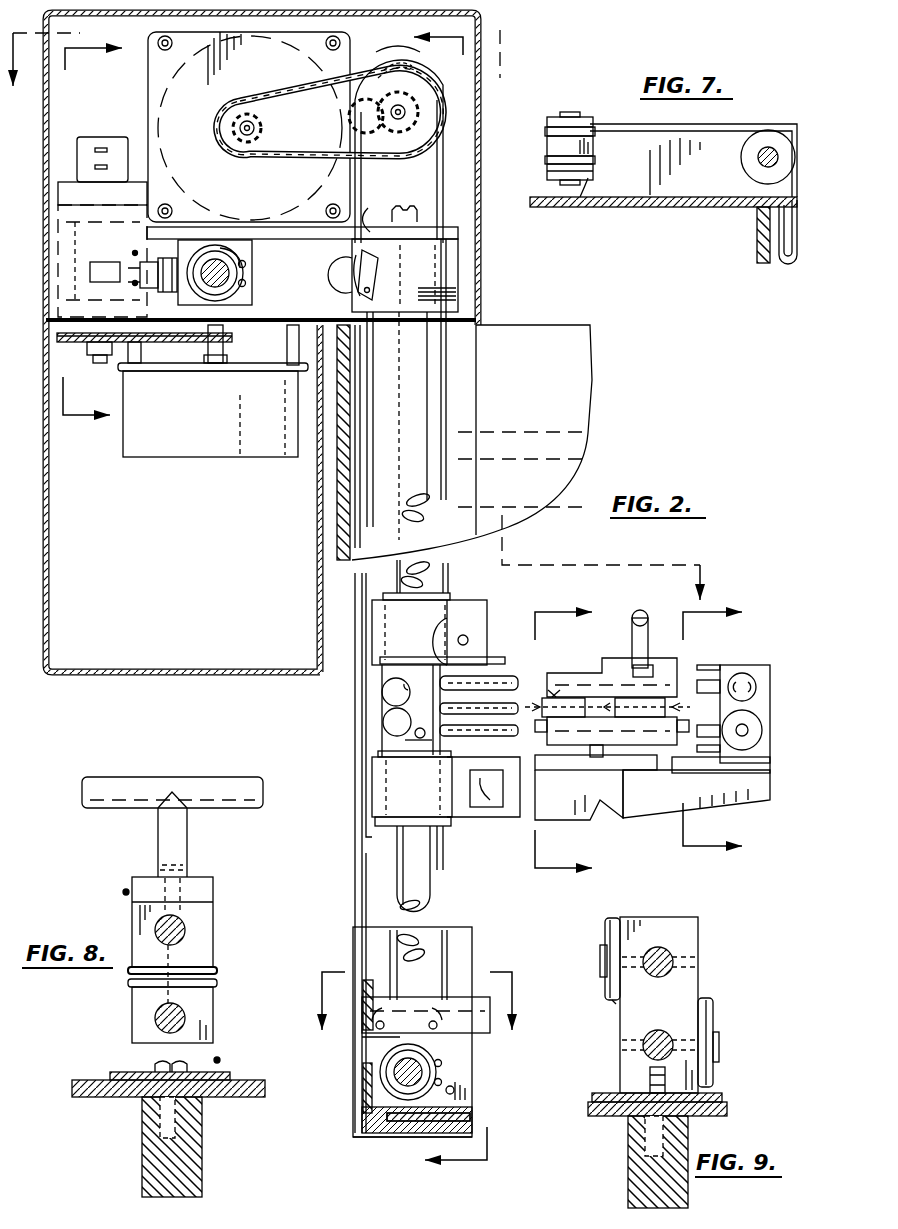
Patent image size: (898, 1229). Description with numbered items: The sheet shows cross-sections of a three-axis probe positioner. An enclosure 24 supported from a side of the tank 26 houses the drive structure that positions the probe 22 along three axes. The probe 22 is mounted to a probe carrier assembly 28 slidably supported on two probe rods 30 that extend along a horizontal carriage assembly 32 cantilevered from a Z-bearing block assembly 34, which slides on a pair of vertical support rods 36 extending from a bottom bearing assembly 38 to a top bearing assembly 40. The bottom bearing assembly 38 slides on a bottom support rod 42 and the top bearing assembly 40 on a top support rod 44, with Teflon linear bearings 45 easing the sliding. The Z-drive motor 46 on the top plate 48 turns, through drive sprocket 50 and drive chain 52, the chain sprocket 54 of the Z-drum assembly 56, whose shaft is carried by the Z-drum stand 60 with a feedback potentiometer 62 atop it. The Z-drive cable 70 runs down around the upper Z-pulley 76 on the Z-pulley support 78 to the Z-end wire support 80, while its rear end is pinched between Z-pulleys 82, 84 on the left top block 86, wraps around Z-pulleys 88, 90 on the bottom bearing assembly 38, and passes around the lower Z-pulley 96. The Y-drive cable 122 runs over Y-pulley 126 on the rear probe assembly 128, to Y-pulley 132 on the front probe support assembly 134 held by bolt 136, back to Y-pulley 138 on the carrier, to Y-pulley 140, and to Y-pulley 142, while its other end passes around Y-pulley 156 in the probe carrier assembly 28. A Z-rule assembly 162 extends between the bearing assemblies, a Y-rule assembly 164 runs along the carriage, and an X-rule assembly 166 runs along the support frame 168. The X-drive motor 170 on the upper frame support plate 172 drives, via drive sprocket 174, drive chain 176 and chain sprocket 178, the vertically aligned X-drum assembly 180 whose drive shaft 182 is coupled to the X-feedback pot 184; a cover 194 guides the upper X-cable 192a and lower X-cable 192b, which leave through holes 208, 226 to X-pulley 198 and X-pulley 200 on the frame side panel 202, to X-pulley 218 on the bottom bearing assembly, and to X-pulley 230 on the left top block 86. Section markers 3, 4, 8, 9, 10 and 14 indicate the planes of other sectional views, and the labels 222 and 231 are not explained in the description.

In FIG. 2, the section line 3- 3 is at (363, 318).
In FIG. 2, the section line 4- 4 is at (409, 1015).
In FIG. 2, the section line 8- 8 is at (575, 742).
In FIG. 2, the section line 9- 9 is at (724, 733).
In FIG. 2, the section line 10- 10 is at (433, 602).
In FIG. 2, the section line 14- 14 is at (104, 251).
In FIG. 2, the probe 22 is at (640, 610).
In FIG. 8, the probe 22 is at (107, 778).
In FIG. 2, the enclosure 24 is at (473, 176).
In FIG. 2, the tank 26 is at (588, 371).
In FIG. 7, the tank 26 is at (757, 257).
In FIG. 2, the probe carrier assembly 28 is at (583, 666).
In FIG. 8, the probe carrier assembly 28 is at (219, 892).
In FIG. 2, the probe rods 30 is at (546, 690).
In FIG. 8, the probe rods 30 is at (188, 933).
In FIG. 9, the probe rods 30 is at (656, 946).
In FIG. 2, the horizontal carriage assembly 32 is at (604, 827).
In FIG. 8, the horizontal carriage assembly 32 is at (108, 1094).
In FIG. 9, the horizontal carriage assembly 32 is at (628, 1139).
In FIG. 2, the Z-bearing block assembly 34 is at (380, 787).
In FIG. 2, the vertical support rods 36 is at (429, 560).
In FIG. 2, the bottom bearing assembly 38 is at (460, 998).
In FIG. 2, the top bearing assembly 40 is at (464, 273).
In FIG. 2, the bottom support rod 42 is at (422, 1073).
In FIG. 2, the top support rod 44 is at (245, 283).
In FIG. 2, the linear bearings 45 is at (244, 264).
In FIG. 2, the Z-drive motor 46 is at (172, 74).
In FIG. 2, the top plate 48 is at (460, 234).
In FIG. 2, the drive sprocket 50 is at (243, 147).
In FIG. 2, the drive chain 52 is at (311, 150).
In FIG. 2, the chain sprocket 54 is at (424, 119).
In FIG. 2, the Z-drum assembly 56 is at (450, 158).
In FIG. 2, the Z-drum stand 60 is at (433, 208).
In FIG. 2, the feedback potentiometer 62 is at (383, 57).
In FIG. 2, the Z-drive cable 70 is at (448, 413).
In FIG. 2, the upper Z-pulley 76 is at (383, 692).
In FIG. 2, the Z-pulley support 78 is at (384, 709).
In FIG. 2, the Z-end wire support 80 is at (418, 206).
In FIG. 2, the Z-pulley 82 is at (370, 228).
In FIG. 2, the Z-pulley 84 is at (344, 292).
In FIG. 2, the left top block 86 is at (458, 298).
In FIG. 2, the Z-pulley 88 is at (376, 1040).
In FIG. 2, the Z-pulley 90 is at (432, 1031).
In FIG. 2, the lower Z-pulley 96 is at (386, 733).
In FIG. 8, the Y-drive cable 122 is at (123, 893).
In FIG. 9, the Y-drive cable 122 is at (613, 1001).
In FIG. 2, the Y-pulley 126 is at (482, 632).
In FIG. 2, the rear probe assembly 128 is at (490, 588).
In FIG. 2, the Y-pulley 132 is at (766, 679).
In FIG. 9, the Y-pulley 132 is at (606, 985).
In FIG. 2, the front probe support assembly 134 is at (732, 665).
In FIG. 9, the front probe support assembly 134 is at (699, 933).
In FIG. 9, the bolt 136 is at (650, 1083).
In FIG. 2, the Y-pulley 138 is at (648, 700).
In FIG. 2, the Y-pulley 140 is at (751, 736).
In FIG. 9, the Y-pulley 140 is at (714, 1018).
In FIG. 2, the Y-pulley 142 is at (503, 808).
In FIG. 2, the Y-pulley 156 is at (553, 695).
In FIG. 8, the Y-pulley 156 is at (205, 967).
In FIG. 2, the Z-rule assembly 162 is at (366, 583).
In FIG. 2, the Y-rule assembly 164 is at (691, 769).
In FIG. 8, the Y-rule assembly 164 is at (120, 1072).
In FIG. 9, the Y-rule assembly 164 is at (702, 1094).
In FIG. 2, the X-rule assembly 166 is at (473, 1119).
In FIG. 2, the support frame 168 is at (378, 1136).
In FIG. 2, the X-drive motor 170 is at (198, 457).
In FIG. 2, the upper frame support plate 172 is at (252, 331).
In FIG. 2, the drive sprocket 174 is at (220, 354).
In FIG. 2, the drive chain 176 is at (175, 347).
In FIG. 2, the chain sprocket 178 is at (95, 358).
In FIG. 2, the X-drum assembly 180 is at (149, 192).
In FIG. 2, the drive shaft 182 is at (112, 366).
In FIG. 2, the X-feedback pot 184 is at (96, 127).
In FIG. 2, the upper X-cable 192a is at (168, 232).
In FIG. 7, the upper X-cable 192a is at (714, 132).
In FIG. 2, the lower X-cable 192b is at (148, 268).
In FIG. 2, the cover 194 is at (160, 188).
In FIG. 7, the X-pulley 198 is at (594, 120).
In FIG. 2, the X-pulley 200 is at (330, 260).
In FIG. 7, the X-pulley 200 is at (768, 134).
In FIG. 2, the frame side panel 202 is at (476, 371).
In FIG. 7, the frame side panel 202 is at (680, 190).
In FIG. 2, the hole 208 is at (133, 254).
In FIG. 2, the X-pulley 218 is at (365, 1093).
In FIG. 7, the screw 222 is at (595, 180).
In FIG. 2, the hole 226 is at (133, 285).
In FIG. 2, the X-pulley 230 is at (200, 239).
In FIG. 2, the retaining ring 231 is at (244, 300).